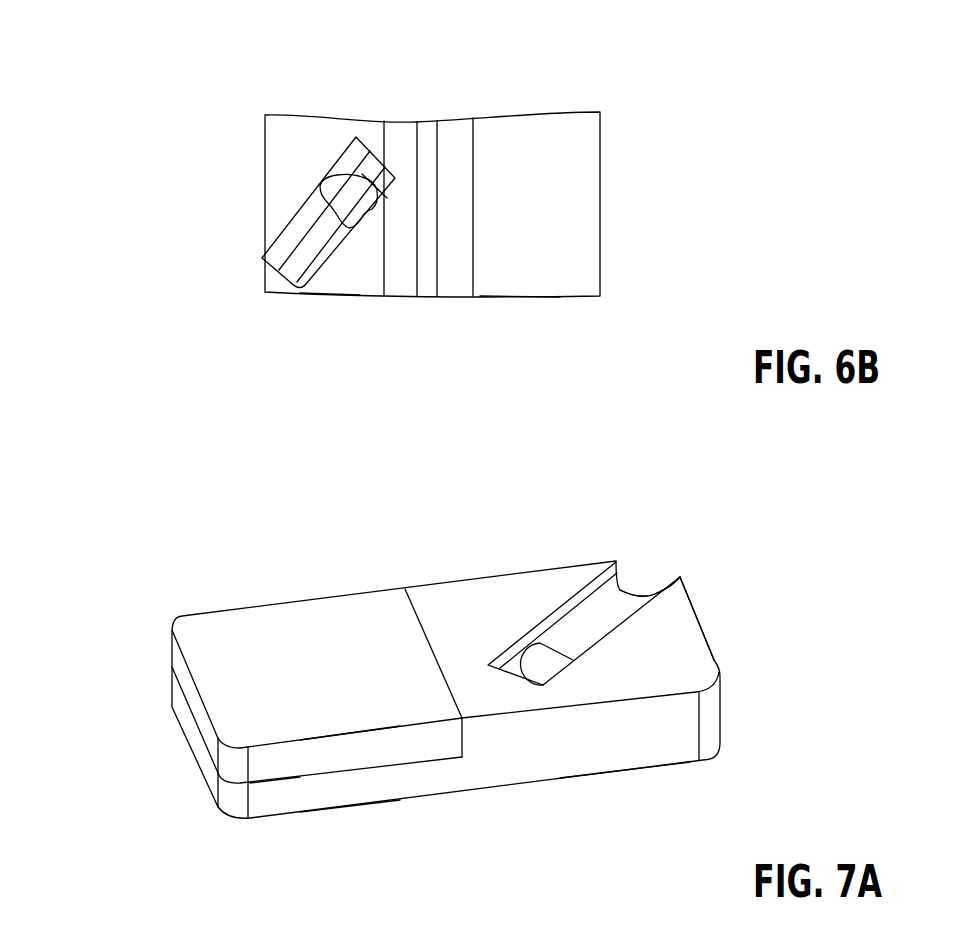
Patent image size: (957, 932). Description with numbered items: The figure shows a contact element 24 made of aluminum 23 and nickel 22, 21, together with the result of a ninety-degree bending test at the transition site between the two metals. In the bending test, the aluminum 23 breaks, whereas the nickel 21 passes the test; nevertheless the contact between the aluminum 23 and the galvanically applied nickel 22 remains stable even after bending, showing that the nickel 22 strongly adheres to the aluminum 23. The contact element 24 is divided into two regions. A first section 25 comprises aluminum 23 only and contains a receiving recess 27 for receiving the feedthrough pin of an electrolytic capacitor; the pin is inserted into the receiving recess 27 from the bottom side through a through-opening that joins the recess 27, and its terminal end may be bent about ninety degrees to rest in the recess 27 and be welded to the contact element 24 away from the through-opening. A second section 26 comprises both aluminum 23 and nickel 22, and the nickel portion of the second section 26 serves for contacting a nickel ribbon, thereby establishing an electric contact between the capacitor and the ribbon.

In FIG. 6B, the nickel 21 is at (525, 278).
In FIG. 7A, the nickel 22 is at (277, 762).
In FIG. 6B, the aluminum 23 is at (363, 277).
In FIG. 7A, the aluminum 23 is at (340, 790).
In FIG. 6B, the contact element 24 is at (236, 173).
In FIG. 7A, the contact element 24 is at (130, 652).
In FIG. 6B, the first section 25 is at (253, 78).
In FIG. 7A, the first section 25 is at (657, 541).
In FIG. 6B, the second section 26 is at (428, 78).
In FIG. 7A, the second section 26 is at (402, 573).
In FIG. 7A, the receiving recess 27 is at (613, 607).